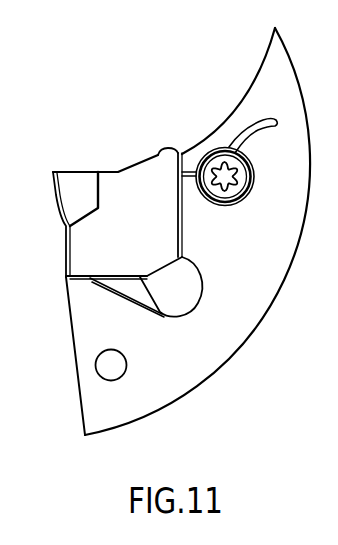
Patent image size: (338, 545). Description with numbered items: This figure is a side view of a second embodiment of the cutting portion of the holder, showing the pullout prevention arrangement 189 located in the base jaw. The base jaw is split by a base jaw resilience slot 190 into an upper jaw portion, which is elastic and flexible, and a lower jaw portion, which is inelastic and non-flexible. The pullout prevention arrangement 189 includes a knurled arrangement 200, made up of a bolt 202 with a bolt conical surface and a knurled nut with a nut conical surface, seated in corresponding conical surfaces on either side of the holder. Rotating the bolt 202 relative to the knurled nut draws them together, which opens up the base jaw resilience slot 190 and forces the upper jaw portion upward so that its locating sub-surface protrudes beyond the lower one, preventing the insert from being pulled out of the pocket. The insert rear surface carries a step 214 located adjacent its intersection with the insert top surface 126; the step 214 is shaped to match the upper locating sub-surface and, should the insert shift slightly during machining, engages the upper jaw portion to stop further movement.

The insert top surface 126 is at (103, 172).
The bolt 202 is at (180, 192).
The step 214 is at (177, 148).
The pullout prevention arrangement 189 is at (222, 118).
The knurled arrangement 200 is at (223, 168).
The base jaw resilience slot 190 is at (260, 117).